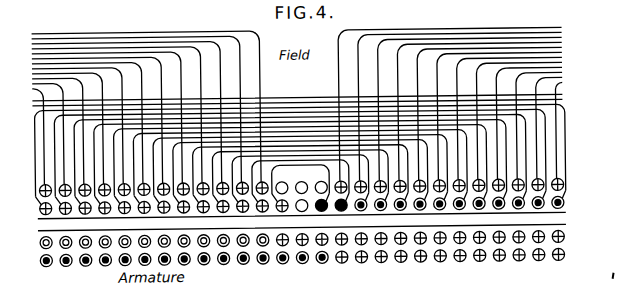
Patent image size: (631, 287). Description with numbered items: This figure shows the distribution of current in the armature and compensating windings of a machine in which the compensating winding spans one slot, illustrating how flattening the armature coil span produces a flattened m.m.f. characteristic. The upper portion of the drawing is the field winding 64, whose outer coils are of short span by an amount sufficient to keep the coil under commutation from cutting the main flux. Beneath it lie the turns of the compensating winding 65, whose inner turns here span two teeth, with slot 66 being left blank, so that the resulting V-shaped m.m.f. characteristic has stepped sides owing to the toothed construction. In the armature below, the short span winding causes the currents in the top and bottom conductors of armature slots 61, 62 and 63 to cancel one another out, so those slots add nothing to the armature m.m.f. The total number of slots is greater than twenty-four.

The armature slot 61 is at (279, 265).
The armature slot 62 is at (300, 266).
The armature slot 63 is at (321, 267).
The field winding 64 is at (262, 46).
The compensating winding 65 is at (291, 97).
The slot 66 is at (305, 213).